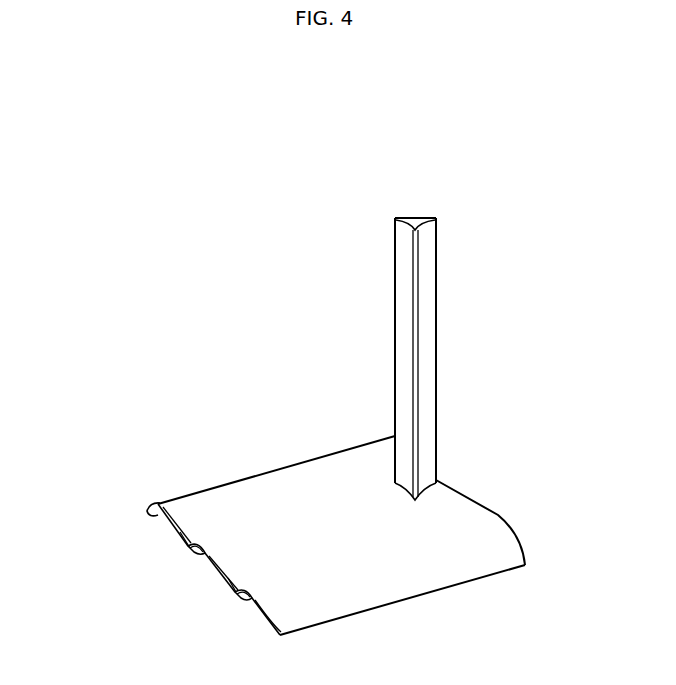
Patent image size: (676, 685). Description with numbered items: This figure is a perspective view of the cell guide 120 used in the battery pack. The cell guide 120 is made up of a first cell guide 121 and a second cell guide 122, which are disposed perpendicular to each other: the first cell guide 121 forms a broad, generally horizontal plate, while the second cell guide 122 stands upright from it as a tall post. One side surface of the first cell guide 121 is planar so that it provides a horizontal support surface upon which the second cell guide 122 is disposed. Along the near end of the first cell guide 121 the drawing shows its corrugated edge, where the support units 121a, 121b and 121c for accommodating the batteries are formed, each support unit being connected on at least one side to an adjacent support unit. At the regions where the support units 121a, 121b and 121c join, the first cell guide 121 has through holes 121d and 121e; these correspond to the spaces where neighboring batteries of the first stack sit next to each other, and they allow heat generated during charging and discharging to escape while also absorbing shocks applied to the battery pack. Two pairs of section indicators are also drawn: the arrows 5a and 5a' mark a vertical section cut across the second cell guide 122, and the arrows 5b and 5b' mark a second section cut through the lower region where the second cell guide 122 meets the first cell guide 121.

The cell guide 120 is at (178, 170).
The first cell guide 121 is at (224, 492).
The support unit 121a is at (205, 568).
The support unit 121b is at (251, 602).
The support unit 121c is at (152, 520).
The through hole 121d is at (236, 602).
The through hole 121e is at (186, 552).
The second cell guide 122 is at (430, 241).
The section line 5a is at (363, 203).
The section line 5a' is at (498, 301).
The section line 5b is at (333, 382).
The section line 5b' is at (510, 507).